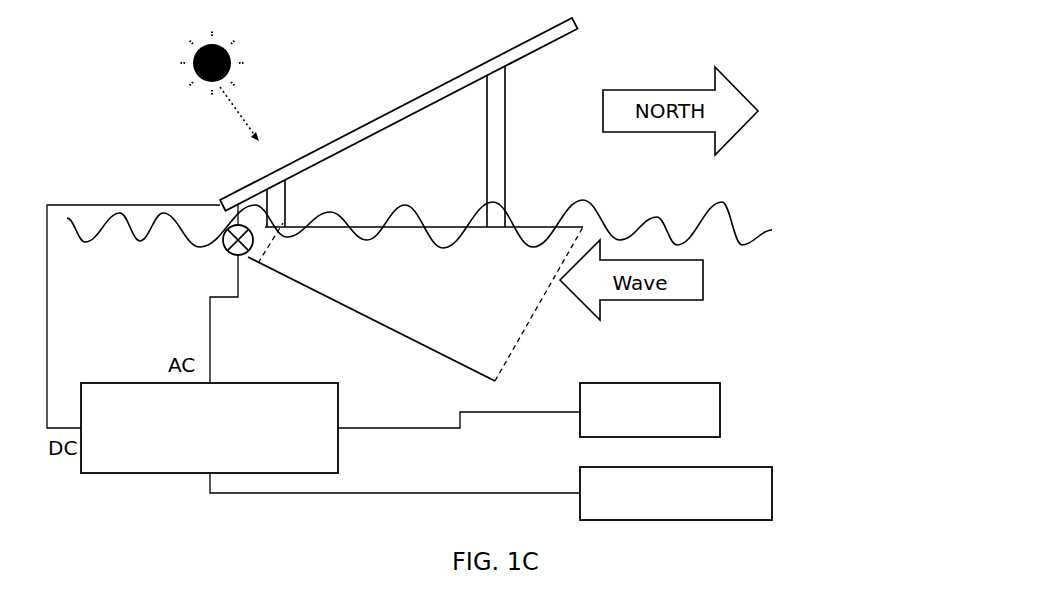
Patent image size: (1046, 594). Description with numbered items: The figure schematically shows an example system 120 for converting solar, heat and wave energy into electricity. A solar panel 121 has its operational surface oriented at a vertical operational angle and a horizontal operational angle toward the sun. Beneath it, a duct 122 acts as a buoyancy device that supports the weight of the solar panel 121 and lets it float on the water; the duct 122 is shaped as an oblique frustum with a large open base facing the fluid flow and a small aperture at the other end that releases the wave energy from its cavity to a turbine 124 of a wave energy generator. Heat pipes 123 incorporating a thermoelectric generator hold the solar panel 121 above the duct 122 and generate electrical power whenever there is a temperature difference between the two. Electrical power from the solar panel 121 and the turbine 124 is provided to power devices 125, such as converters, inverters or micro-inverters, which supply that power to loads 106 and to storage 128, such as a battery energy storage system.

The system 120 is at (205, 157).
The solar panel 121 is at (446, 82).
The duct 122 is at (415, 302).
The heat pipes 123 is at (275, 212).
The turbine 124 is at (248, 257).
The power devices 125 is at (229, 456).
The loads 106 is at (701, 418).
The storage 128 is at (738, 501).